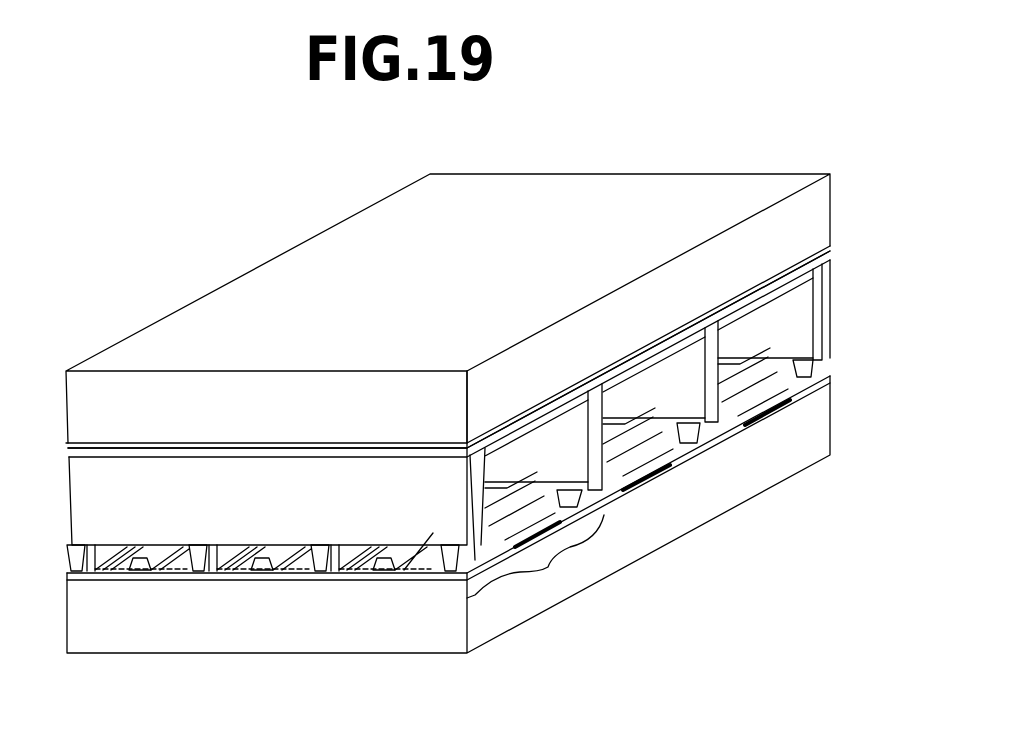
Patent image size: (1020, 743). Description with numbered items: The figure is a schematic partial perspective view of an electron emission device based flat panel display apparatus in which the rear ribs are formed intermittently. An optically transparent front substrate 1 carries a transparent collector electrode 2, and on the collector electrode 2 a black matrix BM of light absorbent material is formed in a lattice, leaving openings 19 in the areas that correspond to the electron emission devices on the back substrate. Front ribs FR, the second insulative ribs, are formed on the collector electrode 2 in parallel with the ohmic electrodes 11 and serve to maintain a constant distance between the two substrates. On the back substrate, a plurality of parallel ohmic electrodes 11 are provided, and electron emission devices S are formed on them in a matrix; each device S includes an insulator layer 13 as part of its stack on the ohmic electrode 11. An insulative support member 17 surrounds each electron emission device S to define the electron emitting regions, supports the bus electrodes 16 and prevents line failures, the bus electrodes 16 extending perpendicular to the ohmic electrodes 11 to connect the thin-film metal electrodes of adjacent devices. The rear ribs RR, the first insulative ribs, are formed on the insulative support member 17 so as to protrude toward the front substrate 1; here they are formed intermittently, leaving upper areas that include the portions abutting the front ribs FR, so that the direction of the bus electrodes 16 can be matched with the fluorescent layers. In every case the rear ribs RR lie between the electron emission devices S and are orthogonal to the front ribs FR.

The front substrate 1 is at (828, 202).
The collector electrode 2 is at (828, 250).
The black matrix BM is at (830, 254).
The front rib FR is at (830, 298).
The rear rib RR is at (828, 362).
The insulative support member 17 is at (832, 377).
The opening 19 is at (832, 418).
The ohmic electrode 11 is at (667, 472).
The electron emission device S is at (552, 574).
The bus electrode 16 is at (260, 570).
The insulator layer 13 is at (362, 575).